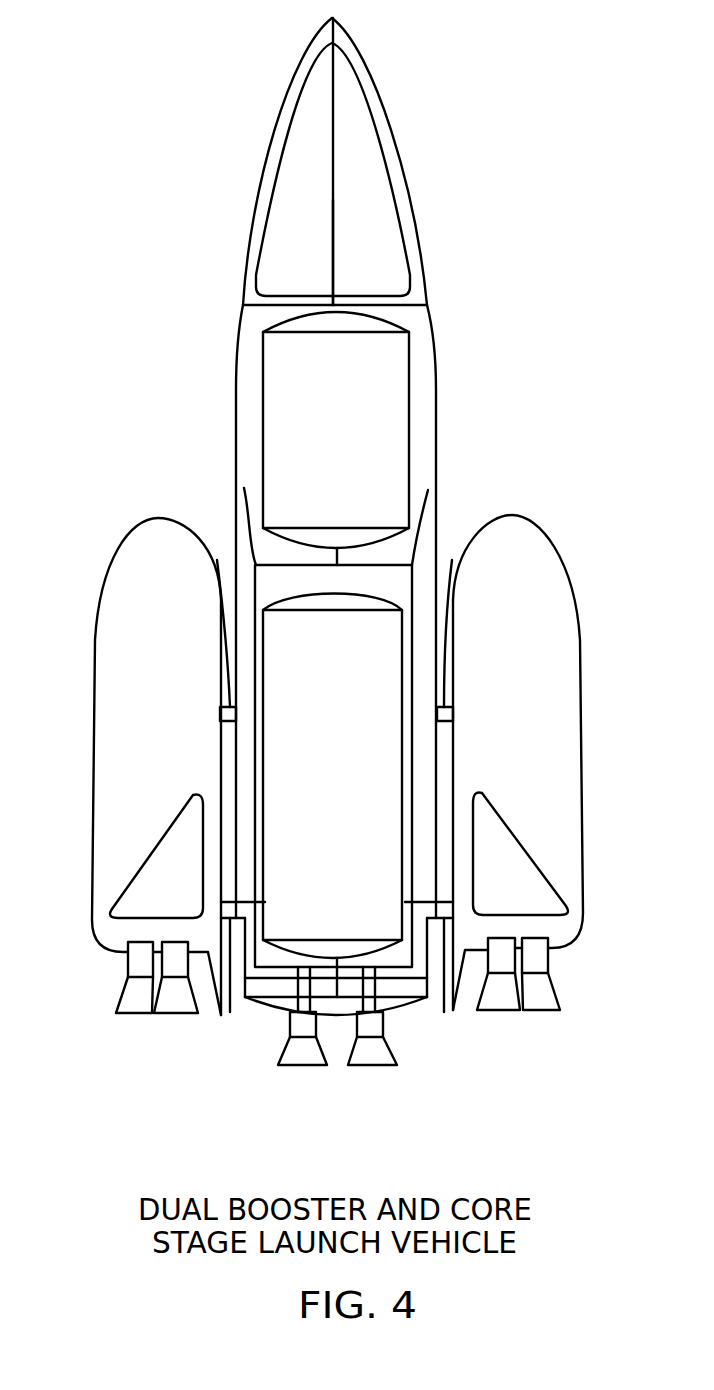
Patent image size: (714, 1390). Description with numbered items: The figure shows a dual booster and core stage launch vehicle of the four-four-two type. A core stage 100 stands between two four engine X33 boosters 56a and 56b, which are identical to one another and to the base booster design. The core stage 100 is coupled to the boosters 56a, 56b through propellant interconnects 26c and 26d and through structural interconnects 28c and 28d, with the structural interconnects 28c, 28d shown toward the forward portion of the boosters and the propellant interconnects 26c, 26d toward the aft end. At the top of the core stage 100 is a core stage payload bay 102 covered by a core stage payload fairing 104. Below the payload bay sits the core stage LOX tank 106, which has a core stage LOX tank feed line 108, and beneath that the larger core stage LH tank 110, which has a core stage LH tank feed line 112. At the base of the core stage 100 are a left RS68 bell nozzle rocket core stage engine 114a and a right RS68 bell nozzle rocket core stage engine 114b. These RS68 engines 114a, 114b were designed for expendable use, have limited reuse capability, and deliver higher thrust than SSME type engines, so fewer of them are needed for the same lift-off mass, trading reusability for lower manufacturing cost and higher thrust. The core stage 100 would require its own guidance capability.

The core stage 100 is at (396, 141).
The core stage payload bay 102 is at (358, 78).
The core stage payload fairing 104 is at (334, 233).
The core stage LOX tank 106 is at (410, 353).
The core stage LOX tank feed line 108 is at (244, 488).
The core stage LH tank 110 is at (428, 490).
The core stage LH tank feed line 112 is at (244, 1000).
The left RS68 bell nozzle rocket core stage engine 114a is at (303, 1066).
The right RS68 bell nozzle rocket core stage engine 114b is at (378, 1066).
The structural interconnect 28c is at (217, 560).
The structural interconnect 28d is at (452, 560).
The propellant interconnect 26c is at (230, 1012).
The propellant interconnect 26d is at (444, 1012).
The four engine X33 booster 56b is at (125, 540).
The four engine X33 booster 56a is at (545, 535).